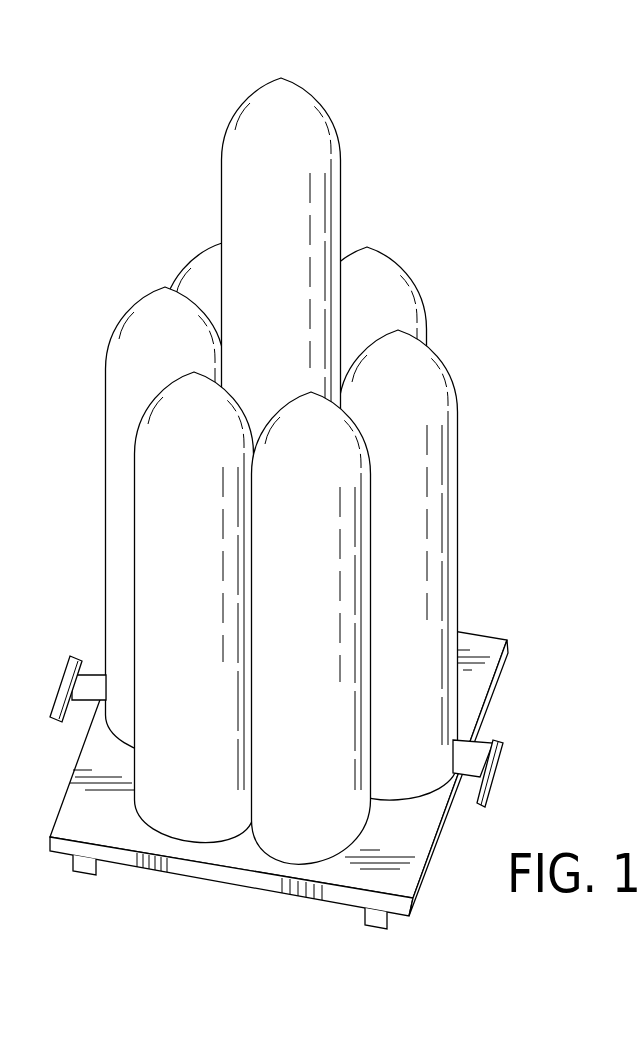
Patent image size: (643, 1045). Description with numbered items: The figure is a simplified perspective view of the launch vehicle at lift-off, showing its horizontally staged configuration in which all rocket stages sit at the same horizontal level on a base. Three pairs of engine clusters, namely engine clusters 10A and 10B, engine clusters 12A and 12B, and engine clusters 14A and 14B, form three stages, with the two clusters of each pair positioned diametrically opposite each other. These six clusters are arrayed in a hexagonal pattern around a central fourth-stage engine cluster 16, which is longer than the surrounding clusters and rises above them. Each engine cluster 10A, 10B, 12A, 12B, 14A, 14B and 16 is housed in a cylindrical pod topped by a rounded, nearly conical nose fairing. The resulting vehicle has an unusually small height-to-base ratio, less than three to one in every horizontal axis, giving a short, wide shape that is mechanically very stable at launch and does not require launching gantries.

The central fourth-stage engine cluster 16 is at (283, 212).
The engine cluster 10A is at (203, 661).
The engine cluster 10B is at (391, 322).
The engine cluster 12A is at (318, 682).
The engine cluster 12B is at (198, 264).
The engine cluster 14A is at (407, 412).
The engine cluster 14B is at (173, 366).